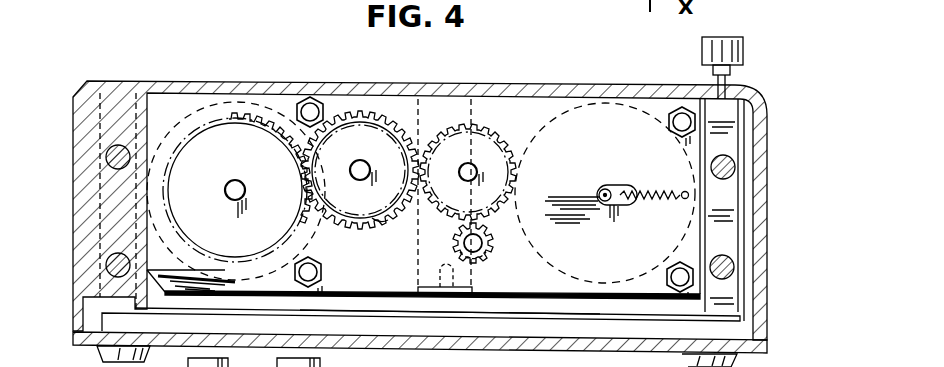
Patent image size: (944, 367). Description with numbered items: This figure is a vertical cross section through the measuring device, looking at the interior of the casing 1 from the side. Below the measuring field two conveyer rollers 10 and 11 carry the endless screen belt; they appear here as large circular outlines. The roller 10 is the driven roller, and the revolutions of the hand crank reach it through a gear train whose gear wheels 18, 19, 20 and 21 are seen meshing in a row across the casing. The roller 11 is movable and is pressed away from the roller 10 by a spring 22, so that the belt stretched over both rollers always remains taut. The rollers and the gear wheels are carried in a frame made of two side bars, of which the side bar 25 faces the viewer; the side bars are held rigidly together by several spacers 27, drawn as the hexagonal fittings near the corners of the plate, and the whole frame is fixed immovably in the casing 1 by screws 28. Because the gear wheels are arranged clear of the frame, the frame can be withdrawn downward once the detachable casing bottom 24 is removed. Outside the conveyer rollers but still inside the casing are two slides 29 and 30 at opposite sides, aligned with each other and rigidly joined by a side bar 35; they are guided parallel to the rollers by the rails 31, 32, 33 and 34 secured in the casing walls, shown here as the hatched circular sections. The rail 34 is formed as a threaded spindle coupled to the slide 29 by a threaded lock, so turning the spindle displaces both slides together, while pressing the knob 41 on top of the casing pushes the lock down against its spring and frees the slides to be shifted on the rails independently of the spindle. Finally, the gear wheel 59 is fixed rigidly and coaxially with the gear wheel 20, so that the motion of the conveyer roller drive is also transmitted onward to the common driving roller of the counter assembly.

The casing 1 is at (768, 117).
The conveyer roller 10 is at (185, 108).
The conveyer roller 11 is at (574, 105).
The gear wheel 18 is at (491, 250).
The gear wheel 19 is at (456, 122).
The gear wheel 20 is at (362, 112).
The gear wheel 21 is at (237, 123).
The tension or compression spring 22 is at (657, 200).
The detachable casing bottom 24 is at (460, 349).
The side bar 25 is at (392, 279).
The spacers 27 is at (311, 100).
The screws 28 is at (494, 294).
The slide 29 is at (718, 234).
The slide 30 is at (110, 302).
The rail 31 is at (110, 159).
The rail 32 is at (108, 265).
The rail 33 is at (728, 270).
The rail (threaded spindle) 34 is at (728, 168).
The side bar 35 is at (585, 313).
The knob 41 is at (733, 54).
The gear wheel 59 is at (379, 222).